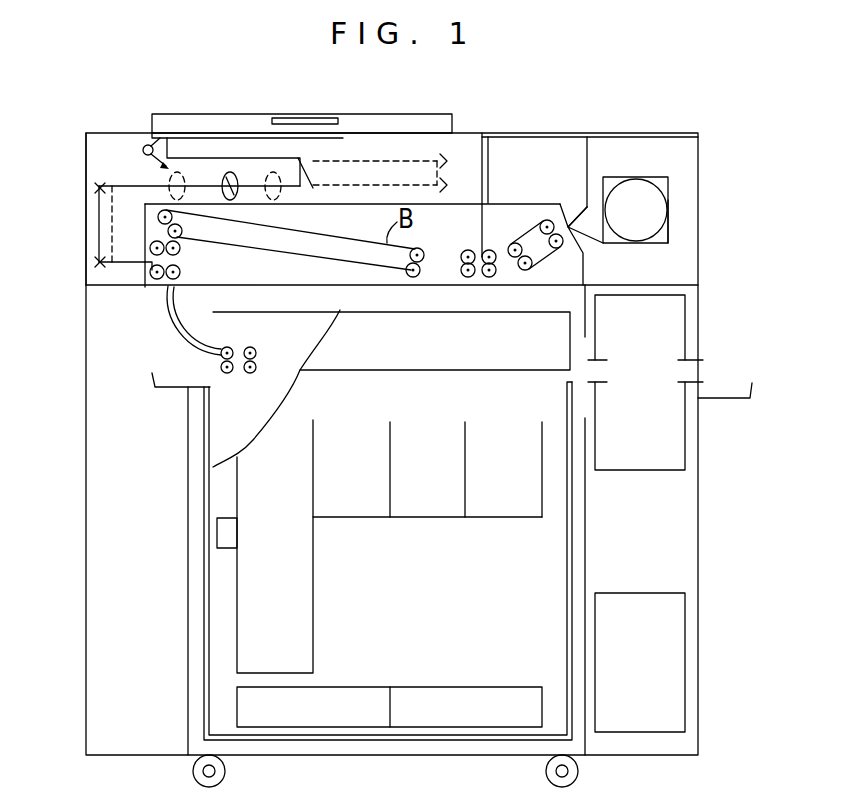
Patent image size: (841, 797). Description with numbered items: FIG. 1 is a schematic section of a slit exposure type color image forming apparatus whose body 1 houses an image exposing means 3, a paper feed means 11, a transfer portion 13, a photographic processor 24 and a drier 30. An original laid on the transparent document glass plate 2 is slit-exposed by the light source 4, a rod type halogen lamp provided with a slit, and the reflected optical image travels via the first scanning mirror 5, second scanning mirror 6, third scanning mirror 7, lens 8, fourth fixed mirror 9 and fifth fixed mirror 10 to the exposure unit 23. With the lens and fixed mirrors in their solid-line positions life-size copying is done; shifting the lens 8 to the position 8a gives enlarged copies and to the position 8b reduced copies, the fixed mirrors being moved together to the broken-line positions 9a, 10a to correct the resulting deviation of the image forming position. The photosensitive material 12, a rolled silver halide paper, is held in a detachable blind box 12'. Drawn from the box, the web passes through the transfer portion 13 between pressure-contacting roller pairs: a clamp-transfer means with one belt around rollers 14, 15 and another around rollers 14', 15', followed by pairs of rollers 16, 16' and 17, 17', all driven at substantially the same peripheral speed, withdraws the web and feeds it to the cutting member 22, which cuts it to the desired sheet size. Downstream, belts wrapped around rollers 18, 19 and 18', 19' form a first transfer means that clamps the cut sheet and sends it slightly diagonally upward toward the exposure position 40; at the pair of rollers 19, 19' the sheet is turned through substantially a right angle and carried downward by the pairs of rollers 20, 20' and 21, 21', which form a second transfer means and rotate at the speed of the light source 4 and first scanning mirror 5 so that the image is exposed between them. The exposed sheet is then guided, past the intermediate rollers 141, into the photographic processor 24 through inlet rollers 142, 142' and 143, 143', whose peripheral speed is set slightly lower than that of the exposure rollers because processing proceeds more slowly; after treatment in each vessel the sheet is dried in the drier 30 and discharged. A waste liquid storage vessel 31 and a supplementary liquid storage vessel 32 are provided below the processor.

The body 1 is at (86, 648).
The transparent document glass plate 2 is at (392, 130).
The image exposing means 3 is at (99, 148).
The light source 4 is at (145, 147).
The first scanning mirror 5 is at (170, 172).
The second scanning mirror 6 is at (298, 156).
The third scanning mirror 7 is at (333, 182).
The lens 8 is at (230, 172).
The lens position for enlargement 8a is at (271, 172).
The lens position for reduction 8b is at (181, 176).
The fourth fixed mirror 9 is at (98, 183).
The broken-line position of fixed mirrors 9a is at (115, 183).
The fifth fixed mirror 10 is at (98, 262).
The feed roller 10a is at (110, 258).
The paper feed means 11 is at (647, 154).
The photosensitive material 12 is at (666, 209).
The blind box 12' is at (702, 221).
The transfer portion 13 is at (453, 223).
The roller 14 is at (557, 179).
The roller 14' is at (593, 150).
The roller 15 is at (561, 261).
The roller 15' is at (542, 301).
The roller 16 is at (505, 304).
The roller 16' is at (491, 298).
The roller 17 is at (447, 298).
The roller 17' is at (463, 304).
The roller 18 is at (408, 297).
The roller 18' is at (391, 304).
The roller 19 is at (104, 231).
The roller 19' is at (109, 222).
The roller 20 is at (290, 261).
The roller 20' is at (221, 267).
The roller 21 is at (107, 294).
The roller 21' is at (98, 315).
The cutting member 22 is at (484, 217).
The exposure unit 23 is at (149, 276).
The photographic processor 24 is at (348, 418).
The drier 30 is at (673, 322).
The waste liquid storage vessel 31 is at (423, 722).
The supplementary liquid storage vessel 32 is at (647, 727).
The exposure position 40 is at (167, 284).
The intermediate pair of rollers 141 is at (170, 348).
The roller 142 is at (229, 386).
The roller 142' is at (215, 335).
The roller 143 is at (267, 386).
The roller 143' is at (274, 335).